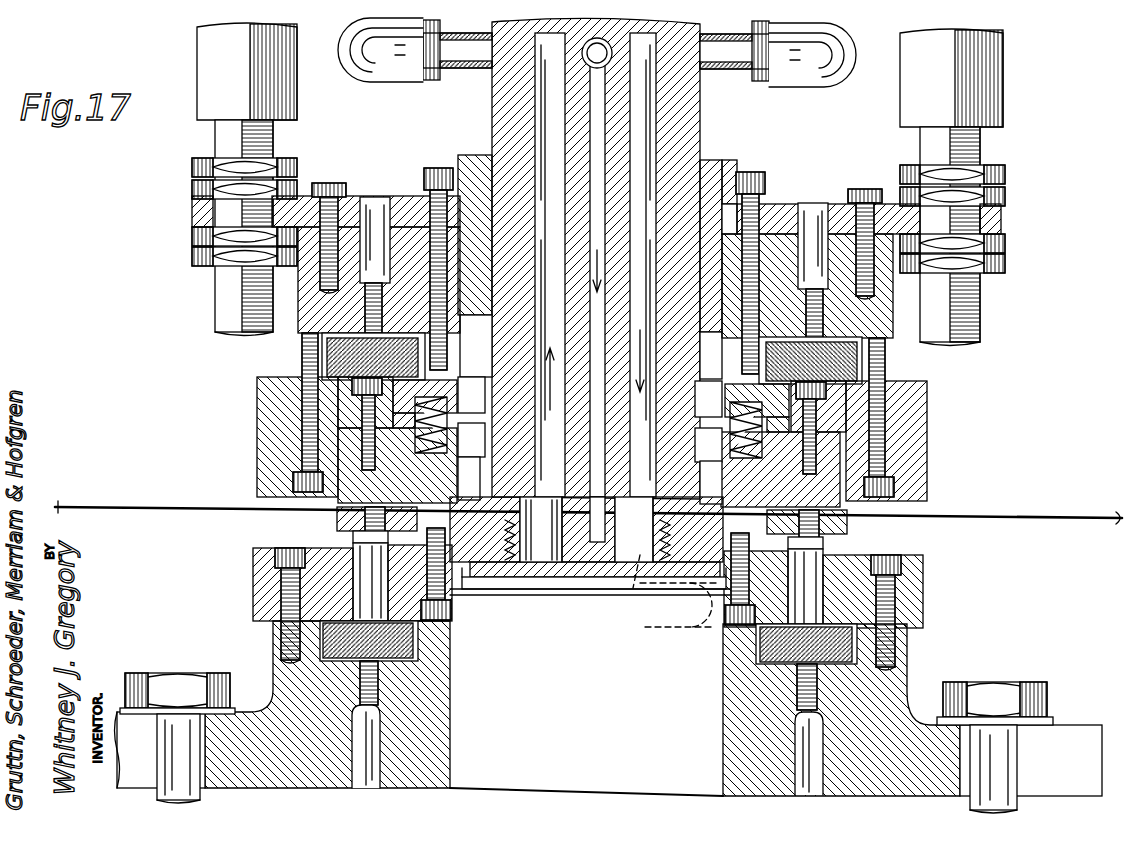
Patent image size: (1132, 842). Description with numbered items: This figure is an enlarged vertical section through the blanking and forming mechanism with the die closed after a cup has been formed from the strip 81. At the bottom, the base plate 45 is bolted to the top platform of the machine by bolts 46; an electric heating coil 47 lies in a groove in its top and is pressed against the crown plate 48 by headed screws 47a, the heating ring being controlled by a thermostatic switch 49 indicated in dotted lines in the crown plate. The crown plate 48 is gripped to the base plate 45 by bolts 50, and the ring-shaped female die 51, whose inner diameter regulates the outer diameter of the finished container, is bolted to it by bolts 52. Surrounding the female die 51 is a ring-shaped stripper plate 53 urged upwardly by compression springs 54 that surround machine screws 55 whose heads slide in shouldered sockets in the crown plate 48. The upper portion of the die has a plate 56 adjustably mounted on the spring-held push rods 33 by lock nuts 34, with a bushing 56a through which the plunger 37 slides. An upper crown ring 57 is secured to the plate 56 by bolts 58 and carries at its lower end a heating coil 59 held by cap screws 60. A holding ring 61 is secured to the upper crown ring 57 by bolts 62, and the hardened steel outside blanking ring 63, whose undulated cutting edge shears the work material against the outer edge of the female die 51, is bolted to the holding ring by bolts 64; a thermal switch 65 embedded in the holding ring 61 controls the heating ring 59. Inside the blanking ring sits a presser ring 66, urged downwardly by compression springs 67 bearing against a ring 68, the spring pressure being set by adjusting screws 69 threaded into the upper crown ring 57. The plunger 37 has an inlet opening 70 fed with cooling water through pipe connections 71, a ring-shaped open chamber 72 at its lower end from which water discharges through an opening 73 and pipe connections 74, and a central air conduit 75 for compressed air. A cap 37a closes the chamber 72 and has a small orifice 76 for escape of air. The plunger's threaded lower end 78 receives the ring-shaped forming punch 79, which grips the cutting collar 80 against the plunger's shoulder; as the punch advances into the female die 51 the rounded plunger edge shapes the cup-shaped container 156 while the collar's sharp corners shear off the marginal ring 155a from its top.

The push rods 33 is at (290, 99).
The lock nuts 34 is at (300, 163).
The plate 56 is at (205, 210).
The bushing 56a is at (725, 160).
The bolts 58 is at (330, 190).
The adjusting screws 69 is at (428, 192).
The cap screws 60 is at (594, 268).
The upper crown ring 57 is at (305, 315).
The heating coil 59 is at (322, 357).
The bolts 64 is at (360, 410).
The bolts 62 is at (302, 448).
The outside blanking ring 63 is at (352, 462).
The thermal switch 65 is at (912, 403).
The holding ring 61 is at (912, 428).
The pipe connections 74 is at (408, 62).
The opening 73 is at (548, 105).
The plunger 37 is at (690, 103).
The inlet opening 70 is at (655, 134).
The pipe connections 71 is at (790, 70).
The central air conduit 75 is at (598, 348).
The ring 68 is at (720, 385).
The compression springs 67 is at (447, 410).
The presser ring 66 is at (720, 470).
The cutting collar 80 is at (478, 490).
The strip 81 is at (1005, 512).
The stripper plate 53 is at (350, 535).
The compression springs 54 is at (348, 540).
The machine screws 55 is at (360, 552).
The female die 51 is at (592, 528).
The bolts 50 is at (285, 578).
The bolts 52 is at (452, 608).
The electric heating coil 47 is at (400, 652).
The base plate 45 is at (440, 681).
The headed screws 47a is at (372, 728).
The bolts 46 is at (185, 686).
The threaded lower end 78 is at (506, 529).
The cap 37a is at (530, 578).
The ring-shaped open chamber 72 is at (632, 565).
The forming punch 79 is at (500, 578).
The orifice 76 is at (590, 580).
The marginal ring 155a is at (642, 529).
The cup-shaped container 156 is at (655, 590).
The thermostatic switch 49 is at (690, 610).
The crown plate 48 is at (928, 594).